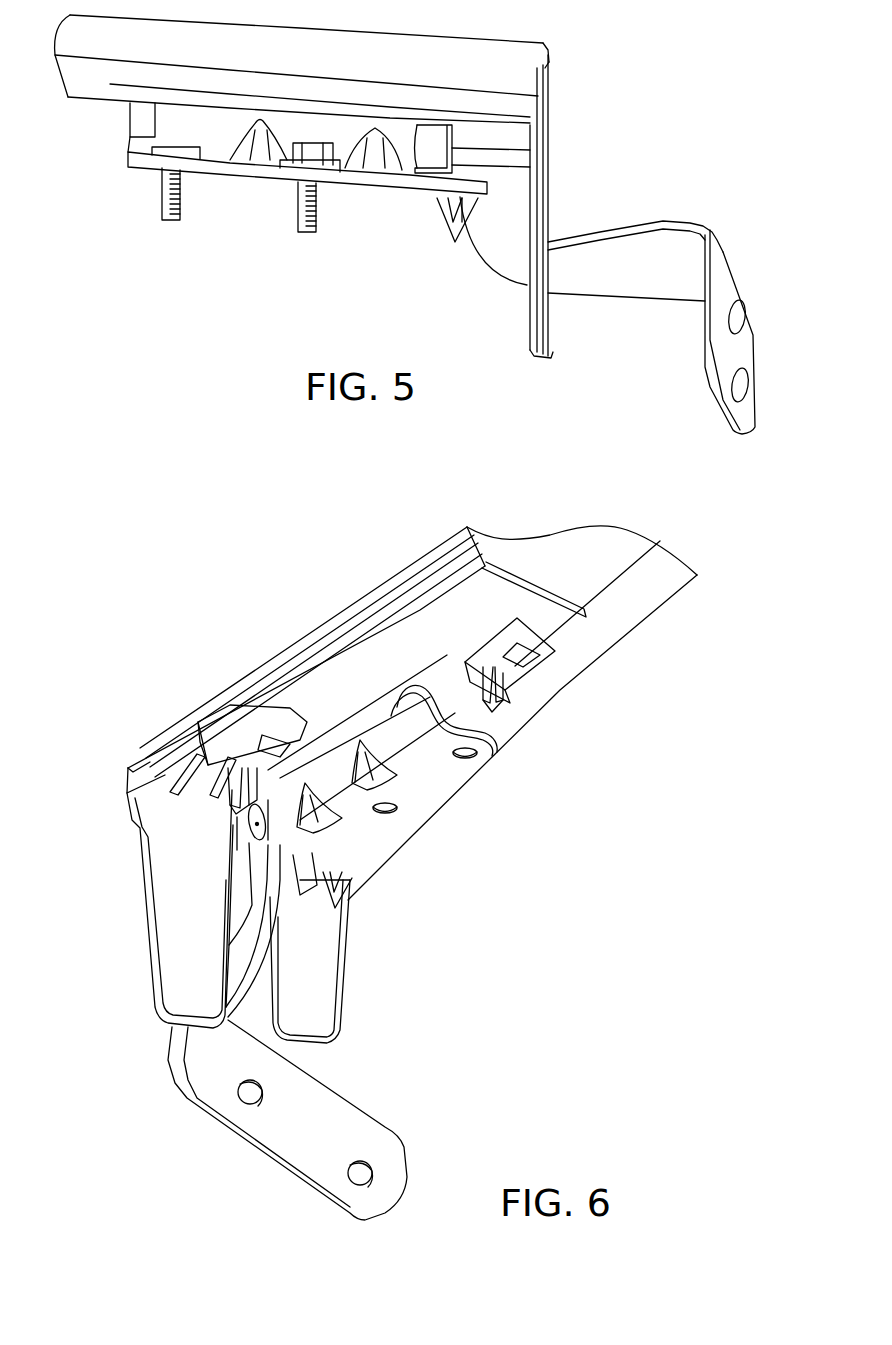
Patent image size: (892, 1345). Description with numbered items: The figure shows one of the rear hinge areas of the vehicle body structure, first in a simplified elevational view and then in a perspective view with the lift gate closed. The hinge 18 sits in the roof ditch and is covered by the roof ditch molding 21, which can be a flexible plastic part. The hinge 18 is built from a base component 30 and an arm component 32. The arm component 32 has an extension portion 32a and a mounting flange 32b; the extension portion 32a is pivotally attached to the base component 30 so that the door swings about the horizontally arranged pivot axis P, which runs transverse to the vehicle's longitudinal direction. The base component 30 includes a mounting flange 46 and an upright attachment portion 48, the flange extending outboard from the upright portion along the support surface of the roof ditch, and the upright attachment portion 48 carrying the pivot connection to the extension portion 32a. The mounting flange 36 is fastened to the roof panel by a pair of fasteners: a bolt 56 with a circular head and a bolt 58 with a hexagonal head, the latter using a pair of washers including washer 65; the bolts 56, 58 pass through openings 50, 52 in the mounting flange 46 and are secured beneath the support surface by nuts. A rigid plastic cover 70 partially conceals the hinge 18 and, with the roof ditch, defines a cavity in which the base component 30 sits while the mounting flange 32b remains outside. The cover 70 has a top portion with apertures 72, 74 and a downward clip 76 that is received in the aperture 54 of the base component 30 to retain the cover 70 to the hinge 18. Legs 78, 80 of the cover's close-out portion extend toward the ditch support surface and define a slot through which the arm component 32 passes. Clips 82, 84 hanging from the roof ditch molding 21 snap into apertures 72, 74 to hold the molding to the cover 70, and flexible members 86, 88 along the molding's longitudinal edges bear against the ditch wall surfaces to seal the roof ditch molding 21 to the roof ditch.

In FIG. 5, the hinge 18 is at (600, 202).
In FIG. 5, the roof ditch molding 21 is at (487, 65).
In FIG. 6, the roof ditch molding 21 is at (276, 656).
In FIG. 5, the base component 30 is at (410, 143).
In FIG. 6, the base component 30 is at (376, 728).
In FIG. 5, the arm component 32 is at (681, 308).
In FIG. 6, the arm component 32 is at (287, 1038).
In FIG. 5, the extension portion 32a is at (622, 273).
In FIG. 6, the extension portion 32a is at (262, 897).
In FIG. 5, the mounting flange 32b is at (740, 355).
In FIG. 6, the mounting flange 32b is at (305, 1145).
In FIG. 5, the mounting flange 36 is at (737, 318).
In FIG. 6, the mounting flange 36 is at (250, 1095).
In FIG. 5, the mounting flange 46 is at (247, 170).
In FIG. 6, the mounting flange 46 is at (440, 783).
In FIG. 5, the upright attachment portion 48 is at (175, 121).
In FIG. 6, the upright attachment portion 48 is at (397, 708).
In FIG. 6, the opening 50 is at (466, 758).
In FIG. 6, the opening 52 is at (386, 812).
In FIG. 6, the aperture 54 is at (328, 875).
In FIG. 5, the bolt 56 is at (168, 222).
In FIG. 5, the bolt 58 is at (302, 234).
In FIG. 5, the washer 65 is at (342, 167).
In FIG. 5, the cover 70 is at (552, 122).
In FIG. 6, the cover 70 is at (497, 590).
In FIG. 6, the aperture 72 is at (521, 660).
In FIG. 6, the aperture 74 is at (260, 745).
In FIG. 5, the clip 76 is at (455, 230).
In FIG. 6, the clip 76 is at (337, 903).
In FIG. 6, the leg 78 is at (187, 950).
In FIG. 6, the leg 80 is at (310, 977).
In FIG. 6, the clip 82 is at (506, 706).
In FIG. 6, the clip 84 is at (258, 786).
In FIG. 6, the flexible member 86 is at (130, 760).
In FIG. 6, the flexible member 88 is at (673, 596).
In FIG. 6, the pivot axis P is at (255, 830).